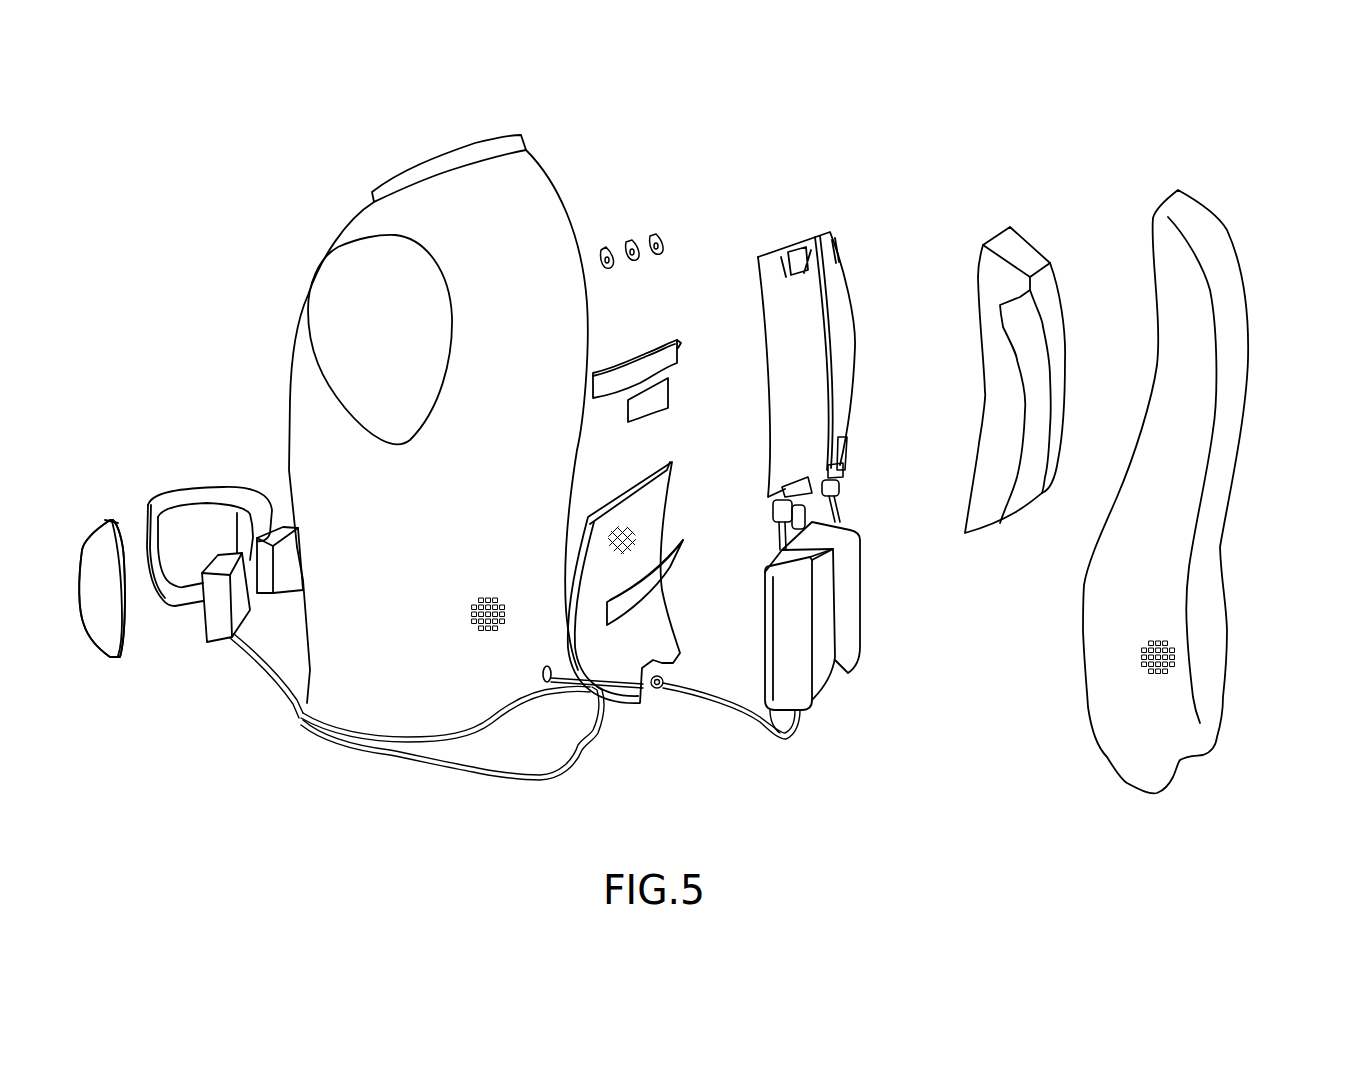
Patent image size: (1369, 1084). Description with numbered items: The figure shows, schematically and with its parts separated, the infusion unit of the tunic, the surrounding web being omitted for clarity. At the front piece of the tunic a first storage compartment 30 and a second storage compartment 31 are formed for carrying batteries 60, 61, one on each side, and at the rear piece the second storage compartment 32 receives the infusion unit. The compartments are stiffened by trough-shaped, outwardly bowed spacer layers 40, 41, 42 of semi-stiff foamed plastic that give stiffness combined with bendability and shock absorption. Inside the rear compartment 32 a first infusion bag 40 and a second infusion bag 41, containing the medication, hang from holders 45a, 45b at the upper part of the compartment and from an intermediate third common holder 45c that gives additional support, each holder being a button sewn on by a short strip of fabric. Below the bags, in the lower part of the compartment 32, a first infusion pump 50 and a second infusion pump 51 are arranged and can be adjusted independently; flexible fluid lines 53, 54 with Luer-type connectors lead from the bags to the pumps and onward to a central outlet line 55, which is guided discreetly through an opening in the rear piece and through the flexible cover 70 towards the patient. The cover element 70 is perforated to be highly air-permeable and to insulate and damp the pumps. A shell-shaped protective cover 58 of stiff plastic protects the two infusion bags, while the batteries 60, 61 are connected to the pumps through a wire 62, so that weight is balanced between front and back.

The first storage compartment 30 is at (141, 647).
The second storage compartment 31 is at (232, 513).
The second storage compartment at the rear piece 32 is at (1200, 450).
The first infusion bag 40 is at (102, 550).
The second infusion bag 41 is at (183, 497).
The spacer layer 42 is at (1157, 595).
The holder 45a is at (600, 248).
The holder 45b is at (653, 235).
The third common holder 45c is at (630, 240).
The first infusion pump 50 is at (792, 665).
The second infusion pump 51 is at (850, 602).
The flexible fluid line 53 is at (783, 537).
The flexible fluid line 54 is at (840, 503).
The central outlet line 55 is at (713, 673).
The shell-shaped protective cover 58 is at (1027, 257).
The battery 60 is at (212, 628).
The battery 61 is at (283, 583).
The wire 62 is at (517, 782).
The flexible cover element 70 is at (637, 530).